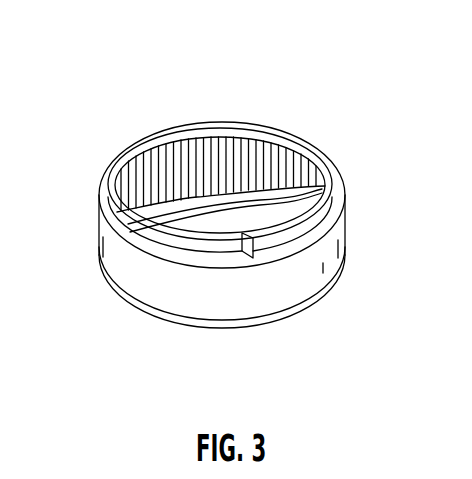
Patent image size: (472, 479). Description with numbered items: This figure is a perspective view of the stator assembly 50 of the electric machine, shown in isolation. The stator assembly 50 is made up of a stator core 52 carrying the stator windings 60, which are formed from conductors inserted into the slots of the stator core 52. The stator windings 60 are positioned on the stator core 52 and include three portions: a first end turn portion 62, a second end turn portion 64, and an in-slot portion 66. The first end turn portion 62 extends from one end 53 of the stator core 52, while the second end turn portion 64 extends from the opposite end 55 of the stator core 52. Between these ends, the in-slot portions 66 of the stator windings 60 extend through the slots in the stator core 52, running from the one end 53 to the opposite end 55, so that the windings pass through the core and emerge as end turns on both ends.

The stator assembly 50 is at (86, 47).
The stator core 52 is at (341, 247).
The one end of the stator core 53 is at (344, 209).
The opposite end of the stator core 55 is at (252, 320).
The stator windings 60 is at (327, 101).
The first end turn portion 62 is at (105, 183).
The second end turn portion 64 is at (199, 329).
The in-slot portion 66 is at (233, 160).